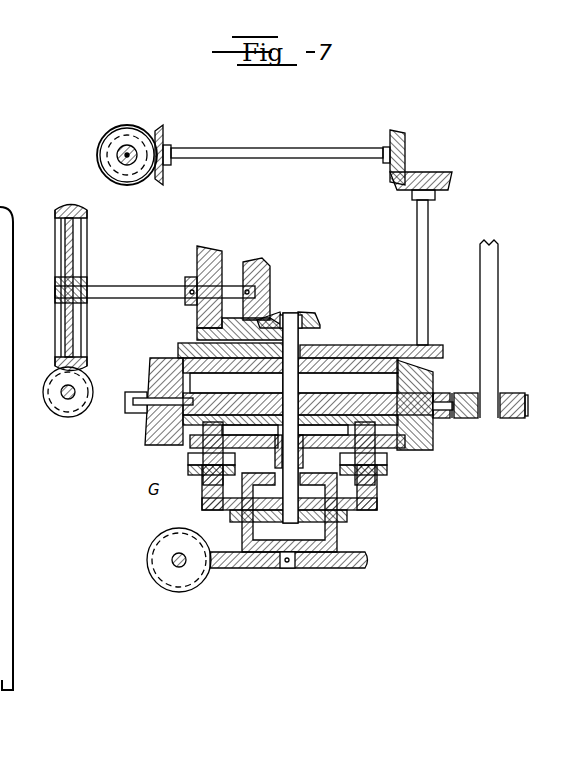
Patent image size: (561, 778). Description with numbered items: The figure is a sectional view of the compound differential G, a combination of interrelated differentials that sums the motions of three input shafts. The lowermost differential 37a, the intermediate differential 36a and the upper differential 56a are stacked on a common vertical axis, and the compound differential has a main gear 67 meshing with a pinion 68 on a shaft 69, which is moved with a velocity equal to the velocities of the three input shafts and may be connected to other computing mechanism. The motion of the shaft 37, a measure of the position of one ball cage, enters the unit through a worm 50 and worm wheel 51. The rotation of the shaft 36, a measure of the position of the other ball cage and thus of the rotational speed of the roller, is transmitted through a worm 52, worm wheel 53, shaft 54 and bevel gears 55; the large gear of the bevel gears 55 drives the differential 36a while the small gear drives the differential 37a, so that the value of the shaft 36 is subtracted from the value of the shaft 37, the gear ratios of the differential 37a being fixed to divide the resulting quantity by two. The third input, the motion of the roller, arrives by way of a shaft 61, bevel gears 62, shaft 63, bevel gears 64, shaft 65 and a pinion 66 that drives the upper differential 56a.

The shaft 36 is at (66, 396).
The intermediate differential 36a is at (378, 483).
The shaft 37 is at (173, 566).
The lowermost differential 37a is at (337, 527).
The worm 50 is at (191, 577).
The worm wheel 51 is at (275, 570).
The worm 52 is at (80, 403).
The worm wheel 53 is at (85, 348).
The shaft 54 is at (130, 289).
The bevel gears 55 is at (254, 264).
The upper differential 56a is at (428, 432).
The shaft 61 is at (122, 163).
The bevel gears 62 is at (157, 131).
The shaft 63 is at (326, 159).
The bevel gears 64 is at (432, 177).
The shaft 65 is at (418, 258).
The pinion 66 is at (438, 350).
The main gear 67 is at (441, 397).
The pinion 68 is at (512, 395).
The shaft 69 is at (493, 333).